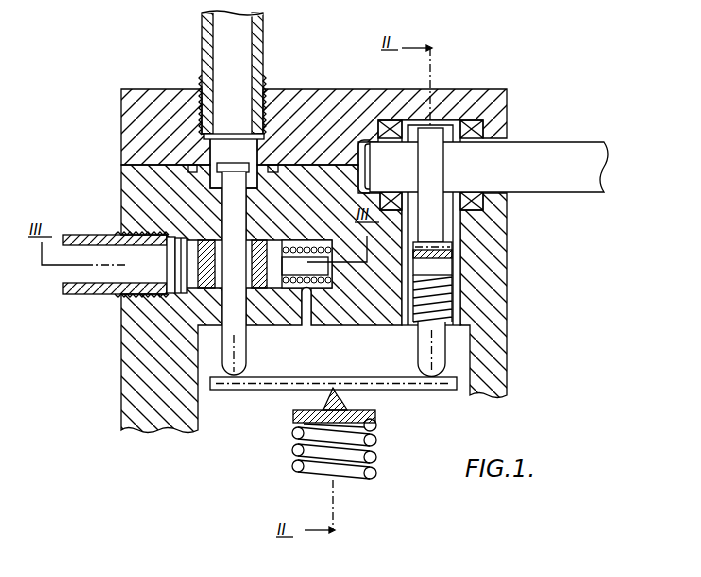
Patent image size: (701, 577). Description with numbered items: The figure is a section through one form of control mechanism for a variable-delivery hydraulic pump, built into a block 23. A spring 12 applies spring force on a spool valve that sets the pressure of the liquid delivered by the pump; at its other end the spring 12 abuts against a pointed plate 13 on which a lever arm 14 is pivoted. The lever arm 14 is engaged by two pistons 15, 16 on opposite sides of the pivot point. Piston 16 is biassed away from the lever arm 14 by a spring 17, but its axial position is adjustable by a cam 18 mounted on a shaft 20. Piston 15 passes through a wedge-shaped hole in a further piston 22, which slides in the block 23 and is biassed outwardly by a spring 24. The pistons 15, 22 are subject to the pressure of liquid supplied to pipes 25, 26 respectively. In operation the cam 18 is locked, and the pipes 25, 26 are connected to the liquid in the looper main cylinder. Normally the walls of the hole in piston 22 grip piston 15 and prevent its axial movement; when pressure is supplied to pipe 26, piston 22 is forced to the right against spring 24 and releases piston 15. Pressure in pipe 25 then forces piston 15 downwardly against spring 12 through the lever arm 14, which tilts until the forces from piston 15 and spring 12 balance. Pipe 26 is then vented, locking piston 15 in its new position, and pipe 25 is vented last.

The spring 12 is at (378, 458).
The pointed plate 13 is at (376, 418).
The lever arm 14 is at (449, 386).
The piston 15 is at (235, 362).
The piston 16 is at (440, 353).
The spring 17 is at (440, 287).
The cam 18 is at (440, 218).
The shaft 20 is at (545, 152).
The piston 22 is at (193, 246).
The block 23 is at (133, 175).
The spring 24 is at (293, 283).
The pipe 25 is at (257, 33).
The pipe 26 is at (75, 296).